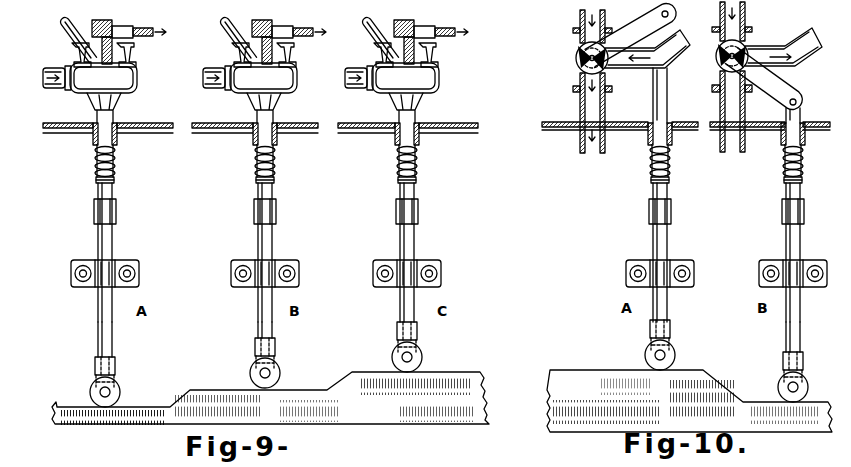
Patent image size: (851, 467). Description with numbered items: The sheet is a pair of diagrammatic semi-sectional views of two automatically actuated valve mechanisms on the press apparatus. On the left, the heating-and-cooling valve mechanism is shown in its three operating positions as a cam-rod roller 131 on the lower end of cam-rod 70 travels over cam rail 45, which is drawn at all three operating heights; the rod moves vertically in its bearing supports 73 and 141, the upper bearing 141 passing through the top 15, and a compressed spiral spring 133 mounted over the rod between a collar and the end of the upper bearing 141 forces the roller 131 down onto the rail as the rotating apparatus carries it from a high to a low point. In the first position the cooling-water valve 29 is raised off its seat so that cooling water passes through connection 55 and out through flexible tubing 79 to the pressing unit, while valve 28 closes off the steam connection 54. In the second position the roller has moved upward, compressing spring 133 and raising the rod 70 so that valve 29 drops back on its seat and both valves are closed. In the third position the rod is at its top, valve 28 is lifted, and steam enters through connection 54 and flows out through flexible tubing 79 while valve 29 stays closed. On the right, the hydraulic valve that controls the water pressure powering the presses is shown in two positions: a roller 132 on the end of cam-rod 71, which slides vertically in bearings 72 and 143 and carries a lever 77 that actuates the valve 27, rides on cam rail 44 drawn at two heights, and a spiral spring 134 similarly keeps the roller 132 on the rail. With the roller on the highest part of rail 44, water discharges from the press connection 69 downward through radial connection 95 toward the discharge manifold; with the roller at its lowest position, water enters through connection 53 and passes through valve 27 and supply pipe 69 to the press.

In FIG. 9, the top 15 is at (147, 130).
In FIG. 10, the top 15 is at (550, 130).
In FIG. 10, the valve 27 is at (572, 70).
In FIG. 9, the valve 28 is at (132, 60).
In FIG. 9, the cooling-water valve 29 is at (73, 60).
In FIG. 10, the cam rail 44 is at (689, 401).
In FIG. 9, the cam rail 45 is at (270, 398).
In FIG. 10, the connection 53 is at (580, 13).
In FIG. 9, the steam connection 54 is at (80, 25).
In FIG. 9, the connection 55 is at (52, 90).
In FIG. 10, the supply pipe 69 is at (673, 62).
In FIG. 9, the cam-rod 70 is at (113, 237).
In FIG. 10, the cam-rod 71 is at (657, 240).
In FIG. 10, the bearing 72 is at (627, 280).
In FIG. 9, the bearing support 73 is at (138, 268).
In FIG. 10, the lever 77 is at (633, 28).
In FIG. 9, the flexible tubing 79 is at (148, 37).
In FIG. 10, the radial connection 95 is at (597, 110).
In FIG. 9, the cam-rod roller 131 is at (122, 392).
In FIG. 10, the roller 132 is at (677, 357).
In FIG. 9, the spiral spring 133 is at (117, 167).
In FIG. 10, the spiral spring 134 is at (650, 167).
In FIG. 9, the upper bearing 141 is at (93, 140).
In FIG. 10, the bearing 143 is at (672, 140).